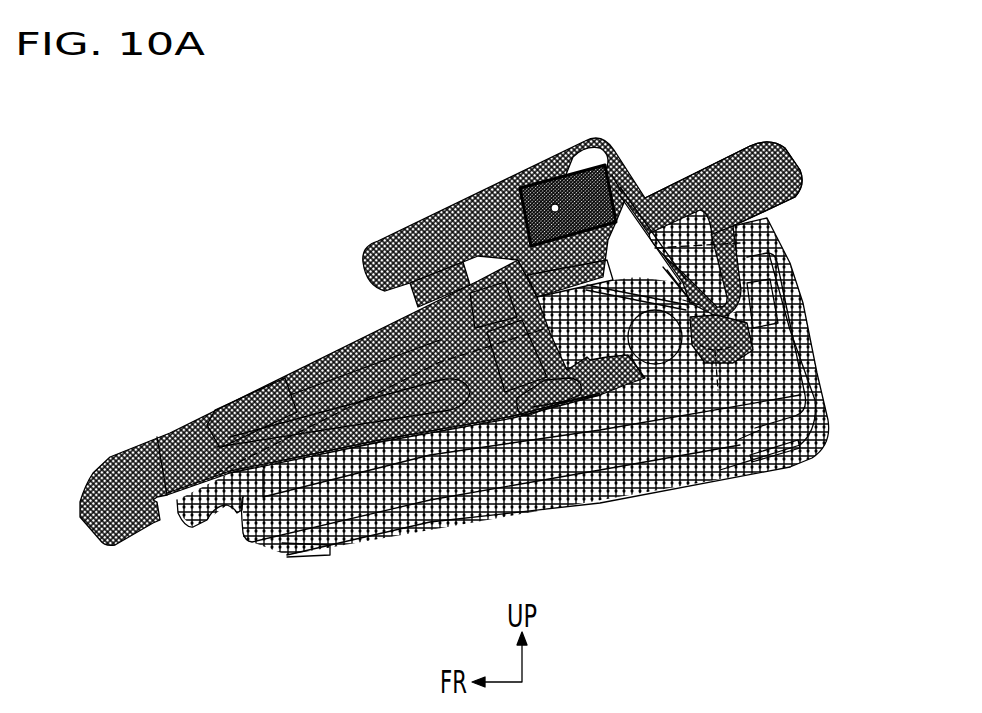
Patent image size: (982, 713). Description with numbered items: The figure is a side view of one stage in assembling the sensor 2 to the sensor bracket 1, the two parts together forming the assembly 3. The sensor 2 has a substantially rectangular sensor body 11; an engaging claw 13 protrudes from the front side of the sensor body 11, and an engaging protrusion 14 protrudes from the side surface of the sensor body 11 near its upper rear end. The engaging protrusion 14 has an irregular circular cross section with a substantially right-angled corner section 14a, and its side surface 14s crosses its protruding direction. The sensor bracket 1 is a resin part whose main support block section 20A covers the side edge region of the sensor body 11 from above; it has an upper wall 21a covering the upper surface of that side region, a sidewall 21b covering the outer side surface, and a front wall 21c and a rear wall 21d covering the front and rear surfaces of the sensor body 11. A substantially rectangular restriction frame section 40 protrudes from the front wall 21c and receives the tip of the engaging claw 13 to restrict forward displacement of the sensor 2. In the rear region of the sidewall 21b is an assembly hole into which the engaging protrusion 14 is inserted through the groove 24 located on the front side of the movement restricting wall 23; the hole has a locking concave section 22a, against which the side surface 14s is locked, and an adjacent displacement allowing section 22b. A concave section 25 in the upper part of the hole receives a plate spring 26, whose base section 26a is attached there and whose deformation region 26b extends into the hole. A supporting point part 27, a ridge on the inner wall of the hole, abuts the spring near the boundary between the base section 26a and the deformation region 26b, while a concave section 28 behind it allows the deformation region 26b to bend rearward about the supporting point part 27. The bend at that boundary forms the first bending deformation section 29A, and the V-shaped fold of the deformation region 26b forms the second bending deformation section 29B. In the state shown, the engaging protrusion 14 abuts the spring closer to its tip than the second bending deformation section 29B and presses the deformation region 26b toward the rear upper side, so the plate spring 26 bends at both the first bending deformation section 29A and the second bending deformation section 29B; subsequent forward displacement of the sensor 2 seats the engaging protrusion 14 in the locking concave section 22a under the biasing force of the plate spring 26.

The sensor bracket 1 is at (797, 157).
The sensor 2 is at (803, 293).
The assembly 3 is at (597, 131).
The sensor body 11 is at (433, 487).
The engaging claws 13 is at (190, 520).
The engaging protrusions 14 is at (668, 347).
The corner sections 14a is at (660, 348).
The side surface 14s is at (665, 385).
The main support block sections 20A is at (287, 370).
The upper wall 21a is at (340, 345).
The sidewall 21b is at (333, 447).
The front wall 21c is at (157, 463).
The rear wall 21d is at (690, 287).
The locking concave section 22a is at (587, 360).
The displacement allowing section 22b is at (707, 323).
The movement restricting wall 23 is at (737, 440).
The groove 24 is at (715, 350).
The concave sections 25 is at (556, 165).
The plate springs 26 is at (638, 232).
The base sections 26a is at (617, 197).
The deformation regions 26b is at (667, 270).
The supporting point parts 27 is at (555, 213).
The concave sections 28 is at (665, 300).
The first bending deformation sections 29A is at (650, 212).
The second bending deformation sections 29B is at (700, 305).
The restriction frame sections 40 is at (102, 528).